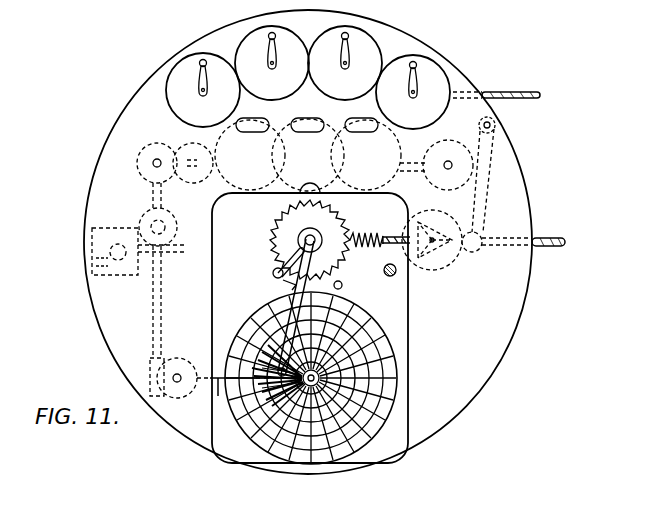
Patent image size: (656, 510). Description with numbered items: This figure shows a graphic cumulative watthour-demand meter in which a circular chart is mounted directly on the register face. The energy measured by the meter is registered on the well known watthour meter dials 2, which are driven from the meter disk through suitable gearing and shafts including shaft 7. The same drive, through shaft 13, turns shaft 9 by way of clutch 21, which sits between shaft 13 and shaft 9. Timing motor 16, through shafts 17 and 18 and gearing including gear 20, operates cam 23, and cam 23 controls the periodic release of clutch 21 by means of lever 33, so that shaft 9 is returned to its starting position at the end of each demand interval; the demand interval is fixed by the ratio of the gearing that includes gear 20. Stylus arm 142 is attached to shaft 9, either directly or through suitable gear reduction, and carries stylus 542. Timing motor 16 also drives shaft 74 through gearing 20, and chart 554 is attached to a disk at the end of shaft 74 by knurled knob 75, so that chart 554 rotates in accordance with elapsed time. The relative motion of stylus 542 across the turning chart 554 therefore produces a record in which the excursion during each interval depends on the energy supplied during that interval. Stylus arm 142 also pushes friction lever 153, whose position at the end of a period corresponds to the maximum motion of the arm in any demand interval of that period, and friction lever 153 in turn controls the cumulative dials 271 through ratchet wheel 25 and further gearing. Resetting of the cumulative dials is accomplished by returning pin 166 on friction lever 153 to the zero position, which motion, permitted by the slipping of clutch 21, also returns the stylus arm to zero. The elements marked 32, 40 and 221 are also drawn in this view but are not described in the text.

The watthour meter dials 2 is at (337, 27).
The shaft 7 is at (497, 93).
The shaft 9 is at (393, 232).
The shaft 13 is at (540, 238).
The timing motor 16 is at (115, 240).
The shaft 17 is at (167, 301).
The shaft 18 is at (156, 206).
The gear 20 is at (172, 358).
The clutch 21 is at (448, 272).
The cam 23 is at (448, 155).
The ratchet wheel 25 is at (284, 226).
The stop 32 is at (278, 285).
The lever 33 is at (486, 199).
The catch 40 is at (95, 262).
The shaft 74 is at (255, 395).
The knurled knob 75 is at (330, 385).
The stylus arm 142 is at (300, 306).
The friction lever 153 is at (288, 263).
The pin 166 is at (274, 272).
The pin 221 is at (365, 274).
The cumulative dials 271 is at (296, 116).
The stylus 542 is at (250, 350).
The circular chart 554 is at (395, 362).